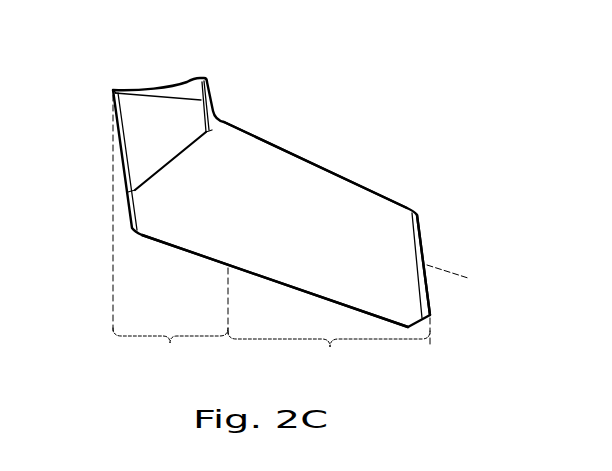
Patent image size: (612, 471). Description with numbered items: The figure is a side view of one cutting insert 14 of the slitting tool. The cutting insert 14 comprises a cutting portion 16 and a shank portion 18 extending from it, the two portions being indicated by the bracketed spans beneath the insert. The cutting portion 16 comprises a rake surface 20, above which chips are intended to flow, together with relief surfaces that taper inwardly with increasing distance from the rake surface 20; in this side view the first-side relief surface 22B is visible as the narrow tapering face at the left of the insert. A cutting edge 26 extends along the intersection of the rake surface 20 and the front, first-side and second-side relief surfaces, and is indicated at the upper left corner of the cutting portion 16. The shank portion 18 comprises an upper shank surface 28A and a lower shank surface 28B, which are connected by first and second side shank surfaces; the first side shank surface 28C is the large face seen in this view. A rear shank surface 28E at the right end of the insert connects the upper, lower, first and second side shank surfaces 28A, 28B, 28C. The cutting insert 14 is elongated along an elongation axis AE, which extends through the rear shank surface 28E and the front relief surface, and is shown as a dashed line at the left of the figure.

The cutting insert 14 is at (453, 96).
The cutting portion 16 is at (170, 321).
The shank portion 18 is at (329, 347).
The rake surface 20 is at (165, 83).
The first-side relief surface 22B is at (182, 138).
The cutting edge 26 is at (113, 88).
The upper shank surface 28A is at (335, 149).
The lower shank surface 28B is at (265, 283).
The first side shank surface 28C is at (320, 235).
The rear shank surface 28E is at (431, 249).
The elongation axis AE is at (123, 170).